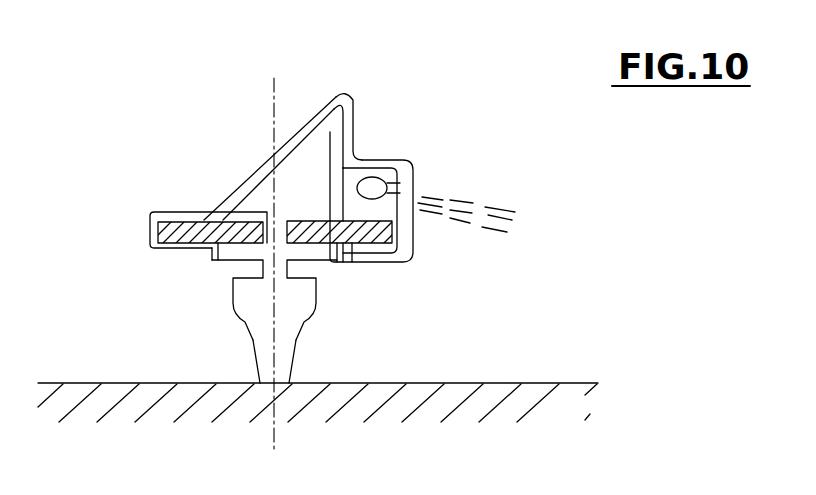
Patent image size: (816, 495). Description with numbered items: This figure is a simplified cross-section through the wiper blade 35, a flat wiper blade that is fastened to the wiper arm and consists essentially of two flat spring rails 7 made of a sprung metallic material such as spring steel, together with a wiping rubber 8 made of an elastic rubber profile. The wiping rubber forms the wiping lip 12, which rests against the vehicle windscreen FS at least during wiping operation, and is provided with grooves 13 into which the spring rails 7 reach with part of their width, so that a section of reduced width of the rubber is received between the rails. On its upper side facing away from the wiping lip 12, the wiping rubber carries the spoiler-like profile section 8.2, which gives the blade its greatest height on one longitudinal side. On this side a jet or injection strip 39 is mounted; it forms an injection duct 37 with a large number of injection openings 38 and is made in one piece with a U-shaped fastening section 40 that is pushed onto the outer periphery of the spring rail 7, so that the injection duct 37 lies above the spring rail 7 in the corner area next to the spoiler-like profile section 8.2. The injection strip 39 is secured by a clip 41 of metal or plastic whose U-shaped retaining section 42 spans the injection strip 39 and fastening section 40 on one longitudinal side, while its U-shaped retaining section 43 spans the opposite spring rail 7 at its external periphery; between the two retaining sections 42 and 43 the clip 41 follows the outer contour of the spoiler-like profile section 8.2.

The spring rail 7 is at (201, 222).
The stand 8 is at (230, 325).
The spoiler-like profile section 8.2 is at (310, 163).
The wiping lip 12 is at (292, 360).
The groove 13 is at (218, 247).
The wiper blade 35 is at (459, 173).
The injection duct 37 is at (366, 190).
The injection opening 38 is at (398, 196).
The injection strip 39 is at (398, 184).
The fastening section 40 is at (403, 258).
The clip 41 is at (300, 129).
The retaining section 42 is at (378, 253).
The retaining section 43 is at (154, 210).
The vehicle windscreen FS is at (533, 382).